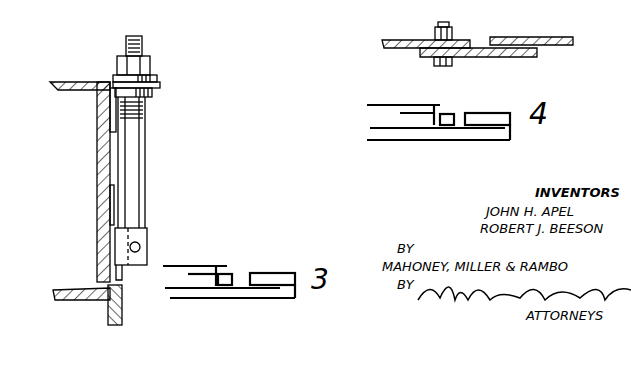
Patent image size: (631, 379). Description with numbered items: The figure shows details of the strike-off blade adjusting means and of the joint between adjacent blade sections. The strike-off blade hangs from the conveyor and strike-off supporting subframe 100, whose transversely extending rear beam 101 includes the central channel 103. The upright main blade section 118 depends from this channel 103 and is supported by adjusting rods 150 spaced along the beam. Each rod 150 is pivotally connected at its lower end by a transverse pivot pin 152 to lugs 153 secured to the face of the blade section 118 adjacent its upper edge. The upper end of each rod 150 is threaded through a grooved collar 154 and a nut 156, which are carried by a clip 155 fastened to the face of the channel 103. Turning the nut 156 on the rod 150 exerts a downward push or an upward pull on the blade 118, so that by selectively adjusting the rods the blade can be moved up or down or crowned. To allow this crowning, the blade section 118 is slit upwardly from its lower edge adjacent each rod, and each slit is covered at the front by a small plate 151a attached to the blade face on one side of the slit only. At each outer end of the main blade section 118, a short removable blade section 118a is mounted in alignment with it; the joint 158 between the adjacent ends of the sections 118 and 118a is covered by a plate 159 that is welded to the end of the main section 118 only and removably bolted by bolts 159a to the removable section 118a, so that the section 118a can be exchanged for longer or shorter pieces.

In FIG. 3, the conveyor and strike-off supporting subframe 100 is at (82, 64).
In FIG. 3, the rear beam 101 is at (73, 291).
In FIG. 3, the central channel 103 is at (70, 82).
In FIG. 3, the main blade section 118 is at (100, 195).
In FIG. 4, the main blade section 118 is at (540, 37).
In FIG. 4, the removable blade section 118a is at (425, 40).
In FIG. 3, the adjusting rod 150 is at (147, 141).
In FIG. 3, the small plate 151a is at (122, 312).
In FIG. 3, the transverse pivot pin 152 is at (141, 247).
In FIG. 3, the lug 153 is at (147, 262).
In FIG. 3, the grooved collar 154 is at (158, 76).
In FIG. 3, the clip 155 is at (162, 85).
In FIG. 3, the nut 156 is at (118, 61).
In FIG. 4, the joint 158 is at (477, 43).
In FIG. 4, the plate 159 is at (476, 57).
In FIG. 4, the bolt 159a is at (440, 60).